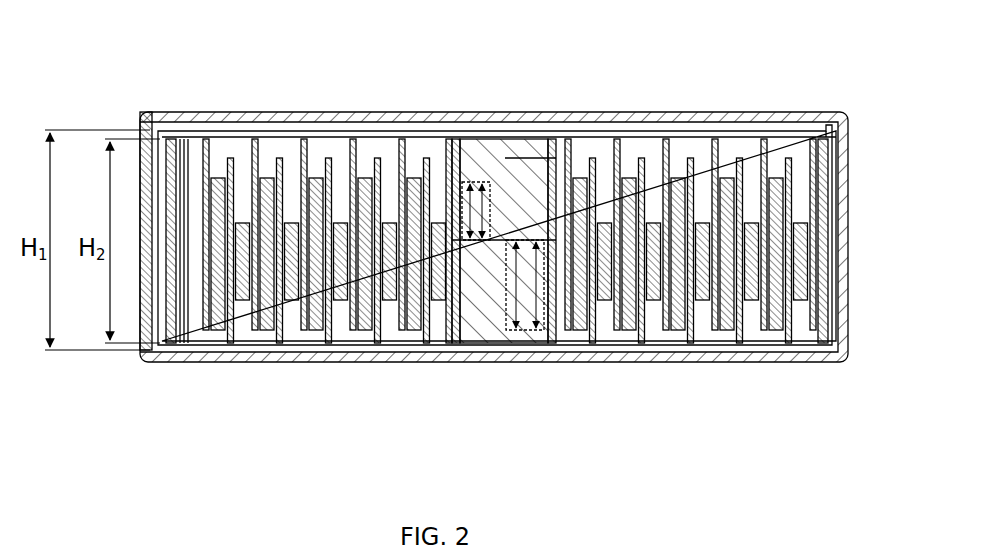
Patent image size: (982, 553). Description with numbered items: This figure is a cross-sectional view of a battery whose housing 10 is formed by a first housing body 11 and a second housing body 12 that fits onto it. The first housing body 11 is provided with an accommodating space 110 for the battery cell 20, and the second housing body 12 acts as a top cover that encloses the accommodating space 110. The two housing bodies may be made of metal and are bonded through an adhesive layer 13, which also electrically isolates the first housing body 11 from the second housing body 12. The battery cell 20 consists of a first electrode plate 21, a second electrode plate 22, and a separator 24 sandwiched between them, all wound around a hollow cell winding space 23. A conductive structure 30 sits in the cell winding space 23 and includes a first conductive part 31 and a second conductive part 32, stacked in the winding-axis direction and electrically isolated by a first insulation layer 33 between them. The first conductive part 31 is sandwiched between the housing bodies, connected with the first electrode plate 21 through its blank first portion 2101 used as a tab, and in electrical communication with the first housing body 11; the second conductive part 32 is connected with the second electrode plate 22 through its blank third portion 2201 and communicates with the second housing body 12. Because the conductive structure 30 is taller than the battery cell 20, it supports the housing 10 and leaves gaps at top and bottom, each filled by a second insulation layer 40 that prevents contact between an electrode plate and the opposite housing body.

The housing 10 is at (840, 48).
The first housing body 11 is at (834, 120).
The second housing body 12 is at (796, 128).
The adhesive layer 13 is at (151, 113).
The battery cell 20 is at (755, 424).
The first electrode plate 21 is at (590, 332).
The second electrode plate 22 is at (702, 345).
The cell winding space 23 is at (455, 352).
The separator 24 is at (626, 336).
The conductive structure 30 is at (555, 48).
The first conductive part 31 is at (522, 238).
The second conductive part 32 is at (486, 150).
The first insulation layer 33 is at (455, 150).
The second insulation layer 40 is at (230, 135).
The accommodating space 110 is at (213, 345).
The first portion 2101 is at (533, 343).
The third portion 2201 is at (364, 178).